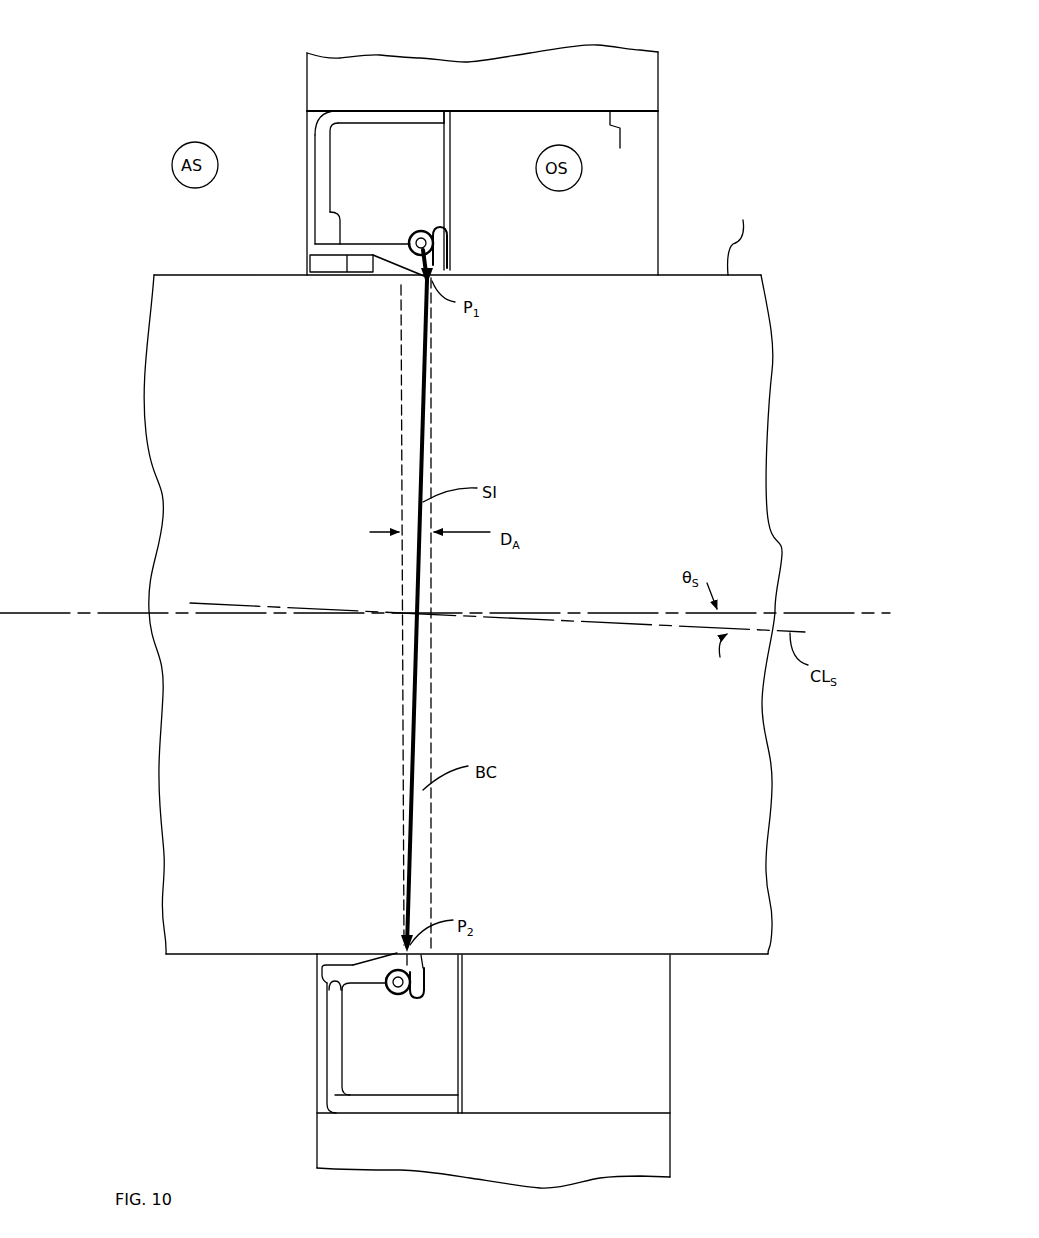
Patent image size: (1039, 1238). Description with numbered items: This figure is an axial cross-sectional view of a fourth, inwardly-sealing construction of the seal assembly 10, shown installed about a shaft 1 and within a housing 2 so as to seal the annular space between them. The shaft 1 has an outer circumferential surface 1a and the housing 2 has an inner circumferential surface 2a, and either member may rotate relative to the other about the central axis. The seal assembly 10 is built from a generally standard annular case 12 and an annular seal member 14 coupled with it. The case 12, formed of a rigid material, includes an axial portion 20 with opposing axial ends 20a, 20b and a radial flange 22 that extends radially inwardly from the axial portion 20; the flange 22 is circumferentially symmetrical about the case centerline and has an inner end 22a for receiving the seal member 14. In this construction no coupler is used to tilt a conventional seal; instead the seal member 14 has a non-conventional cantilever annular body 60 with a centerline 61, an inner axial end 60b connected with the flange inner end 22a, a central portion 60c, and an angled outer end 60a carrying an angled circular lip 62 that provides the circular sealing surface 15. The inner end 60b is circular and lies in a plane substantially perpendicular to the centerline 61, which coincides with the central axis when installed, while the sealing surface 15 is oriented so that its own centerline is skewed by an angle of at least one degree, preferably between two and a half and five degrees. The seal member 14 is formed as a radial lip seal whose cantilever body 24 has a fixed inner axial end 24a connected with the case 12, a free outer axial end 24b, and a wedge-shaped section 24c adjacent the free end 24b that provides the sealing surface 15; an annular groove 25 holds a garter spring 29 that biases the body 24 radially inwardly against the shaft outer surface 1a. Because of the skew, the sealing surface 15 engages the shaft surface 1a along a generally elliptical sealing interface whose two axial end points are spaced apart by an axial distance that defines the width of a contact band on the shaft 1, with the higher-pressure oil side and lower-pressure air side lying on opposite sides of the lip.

The shaft 1 is at (160, 306).
The outer circumferential surface 1a is at (741, 236).
The housing 2 is at (645, 76).
The inner circumferential surface 2a is at (618, 141).
The seal assembly 10 is at (549, 208).
The annular case 12 is at (382, 80).
The annular seal member 14 is at (422, 196).
The sealing surface 15 is at (403, 941).
The axial portion 20 is at (412, 107).
The axial end 20a is at (337, 110).
The axial end 20b is at (444, 110).
The radial flange 22 is at (315, 164).
The inner end 22a is at (325, 227).
The cantilever body 24 is at (385, 991).
The fixed inner axial end 24a is at (316, 978).
The free outer axial end 24b is at (426, 985).
The wedge-shaped section 24c is at (394, 949).
The annular groove 25 is at (424, 972).
The garter spring 29 is at (405, 994).
The annular body 60 is at (378, 242).
The angled outer end 60a is at (447, 250).
The inner axial end 60b is at (313, 236).
The central portion 60c is at (392, 257).
The centerline 61 is at (845, 612).
The angled circular lip 62 is at (415, 277).